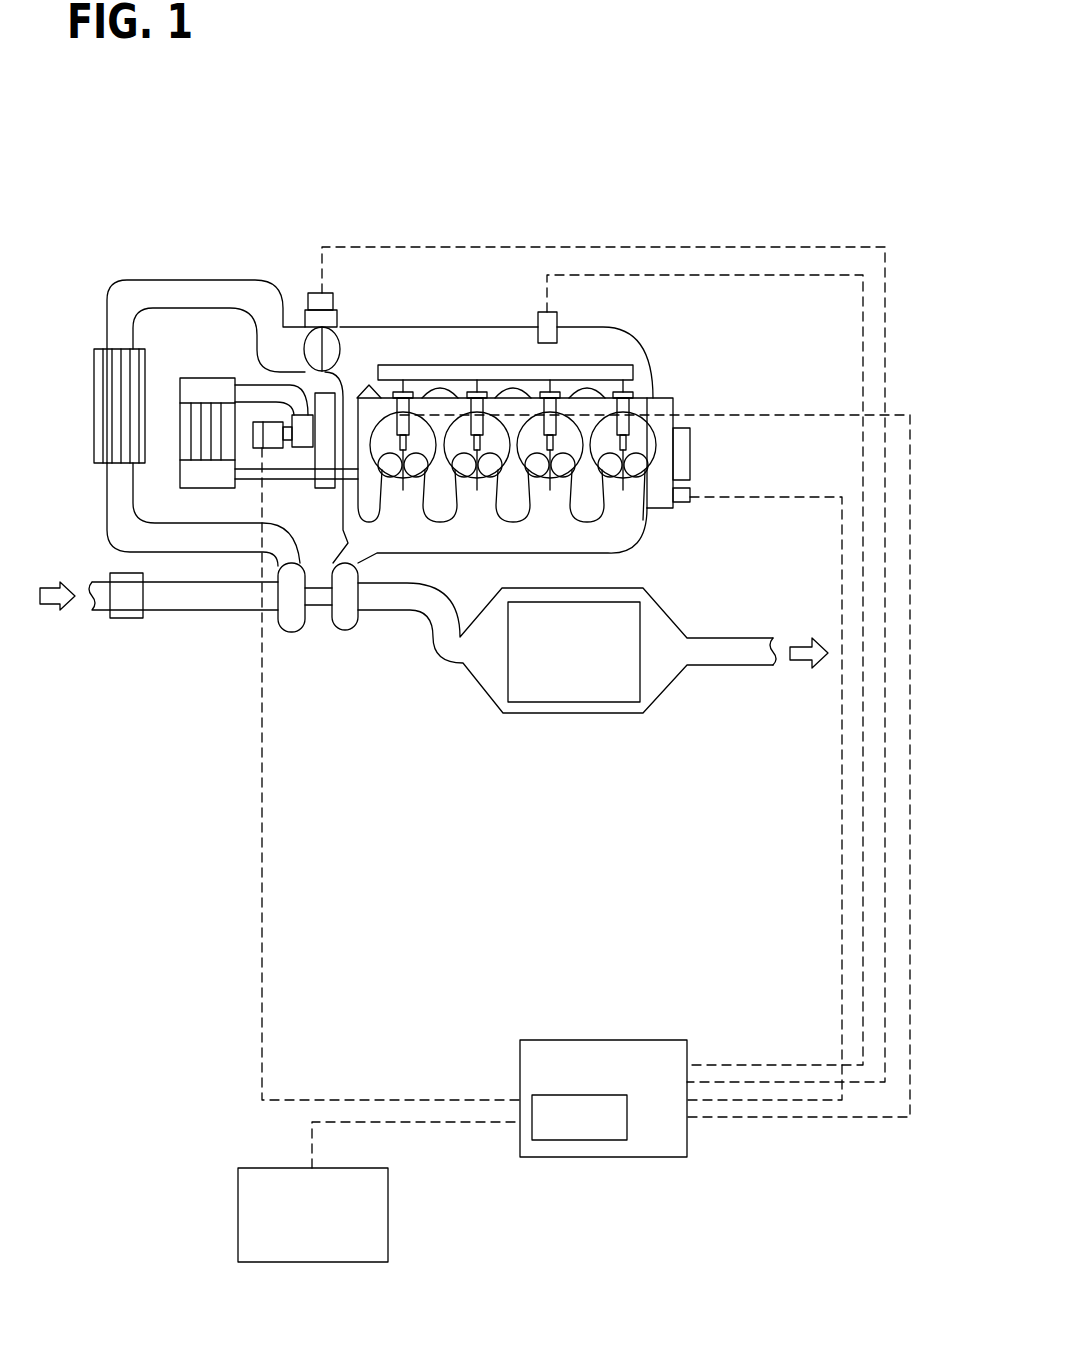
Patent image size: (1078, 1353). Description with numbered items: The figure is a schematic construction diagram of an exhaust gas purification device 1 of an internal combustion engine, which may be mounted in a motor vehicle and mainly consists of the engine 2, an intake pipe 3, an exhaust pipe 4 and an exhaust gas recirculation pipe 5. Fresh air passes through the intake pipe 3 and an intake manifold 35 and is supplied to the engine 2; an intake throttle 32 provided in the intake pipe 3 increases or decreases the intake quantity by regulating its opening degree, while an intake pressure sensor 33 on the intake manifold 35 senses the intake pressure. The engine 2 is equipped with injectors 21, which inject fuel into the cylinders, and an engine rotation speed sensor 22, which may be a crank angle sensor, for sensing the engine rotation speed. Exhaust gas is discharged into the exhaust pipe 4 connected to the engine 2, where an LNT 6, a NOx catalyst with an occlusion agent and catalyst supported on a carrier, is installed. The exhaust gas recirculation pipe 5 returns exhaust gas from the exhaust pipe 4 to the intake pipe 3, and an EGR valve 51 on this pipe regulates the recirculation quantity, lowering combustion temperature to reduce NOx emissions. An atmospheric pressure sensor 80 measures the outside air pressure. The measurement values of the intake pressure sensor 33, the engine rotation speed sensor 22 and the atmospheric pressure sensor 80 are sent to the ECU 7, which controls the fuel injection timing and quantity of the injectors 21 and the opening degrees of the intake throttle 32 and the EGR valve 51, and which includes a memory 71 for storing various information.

The exhaust gas purification device 1 is at (708, 194).
The engine 2 is at (675, 398).
The injector 21 is at (632, 428).
The engine rotation speed sensor 22 is at (690, 505).
The intake pipe 3 is at (212, 611).
The exhaust pipe 4 is at (372, 612).
The exhaust gas recirculation pipe 5 is at (287, 480).
The EGR valve 51 is at (270, 420).
The LNT 6 is at (607, 602).
The ECU 7 is at (687, 1125).
The memory 71 is at (627, 1122).
The atmospheric pressure sensor 80 is at (388, 1210).
The intake throttle 32 is at (345, 340).
The intake pressure sensor 33 is at (538, 320).
The intake manifold 35 is at (605, 327).